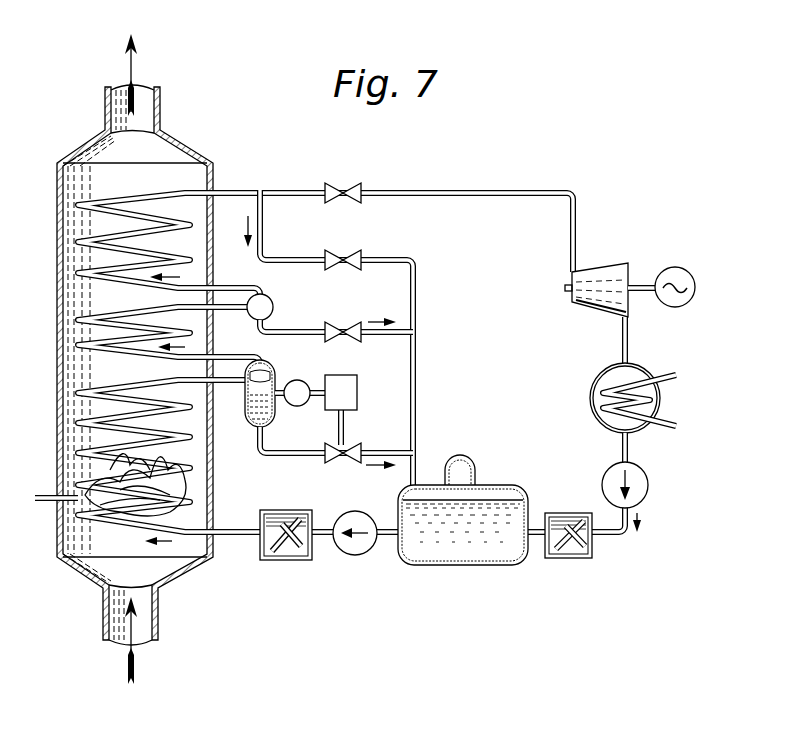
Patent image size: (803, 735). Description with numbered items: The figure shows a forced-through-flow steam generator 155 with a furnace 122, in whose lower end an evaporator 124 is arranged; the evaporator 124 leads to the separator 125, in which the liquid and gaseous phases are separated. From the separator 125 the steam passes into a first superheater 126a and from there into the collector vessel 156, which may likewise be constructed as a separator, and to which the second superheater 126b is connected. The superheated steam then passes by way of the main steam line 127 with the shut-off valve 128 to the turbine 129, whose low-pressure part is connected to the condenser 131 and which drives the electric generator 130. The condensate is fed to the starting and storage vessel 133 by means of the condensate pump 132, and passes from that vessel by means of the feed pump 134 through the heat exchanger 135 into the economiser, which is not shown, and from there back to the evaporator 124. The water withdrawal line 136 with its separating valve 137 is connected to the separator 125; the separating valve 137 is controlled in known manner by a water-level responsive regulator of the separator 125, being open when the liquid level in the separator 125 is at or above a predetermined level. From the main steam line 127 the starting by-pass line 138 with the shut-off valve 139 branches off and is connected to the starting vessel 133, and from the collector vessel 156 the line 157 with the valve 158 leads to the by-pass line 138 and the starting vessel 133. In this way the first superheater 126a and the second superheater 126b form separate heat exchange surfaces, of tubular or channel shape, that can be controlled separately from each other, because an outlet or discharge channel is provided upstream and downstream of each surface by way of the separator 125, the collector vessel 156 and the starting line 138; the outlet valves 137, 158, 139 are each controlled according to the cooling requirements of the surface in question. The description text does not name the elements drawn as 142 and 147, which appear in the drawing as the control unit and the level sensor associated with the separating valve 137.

The furnace 122 is at (98, 505).
The evaporator 124 is at (108, 402).
The separator 125 is at (273, 375).
The first superheater 126a is at (122, 330).
The second superheater 126b is at (137, 238).
The main steam line 127 is at (238, 190).
The shut-off valve 128 is at (343, 183).
The turbine 129 is at (602, 280).
The electric generator 130 is at (675, 268).
The condenser 131 is at (591, 400).
The condensate pump 132 is at (648, 485).
The starting and storage vessel 133 is at (480, 567).
The feed pump 134 is at (360, 555).
The heat exchanger 135 is at (283, 562).
The water withdrawal line 136 is at (292, 457).
The separating valve 137 is at (339, 461).
The starting by-pass line 138 is at (263, 232).
The shut-off valve 139 is at (346, 251).
The controller 142 is at (355, 386).
The level sensor 147 is at (297, 407).
The forced-through-flow steam generator 155 is at (62, 568).
The collector vessel 156 is at (271, 305).
The line 157 is at (284, 332).
The valve 158 is at (345, 328).